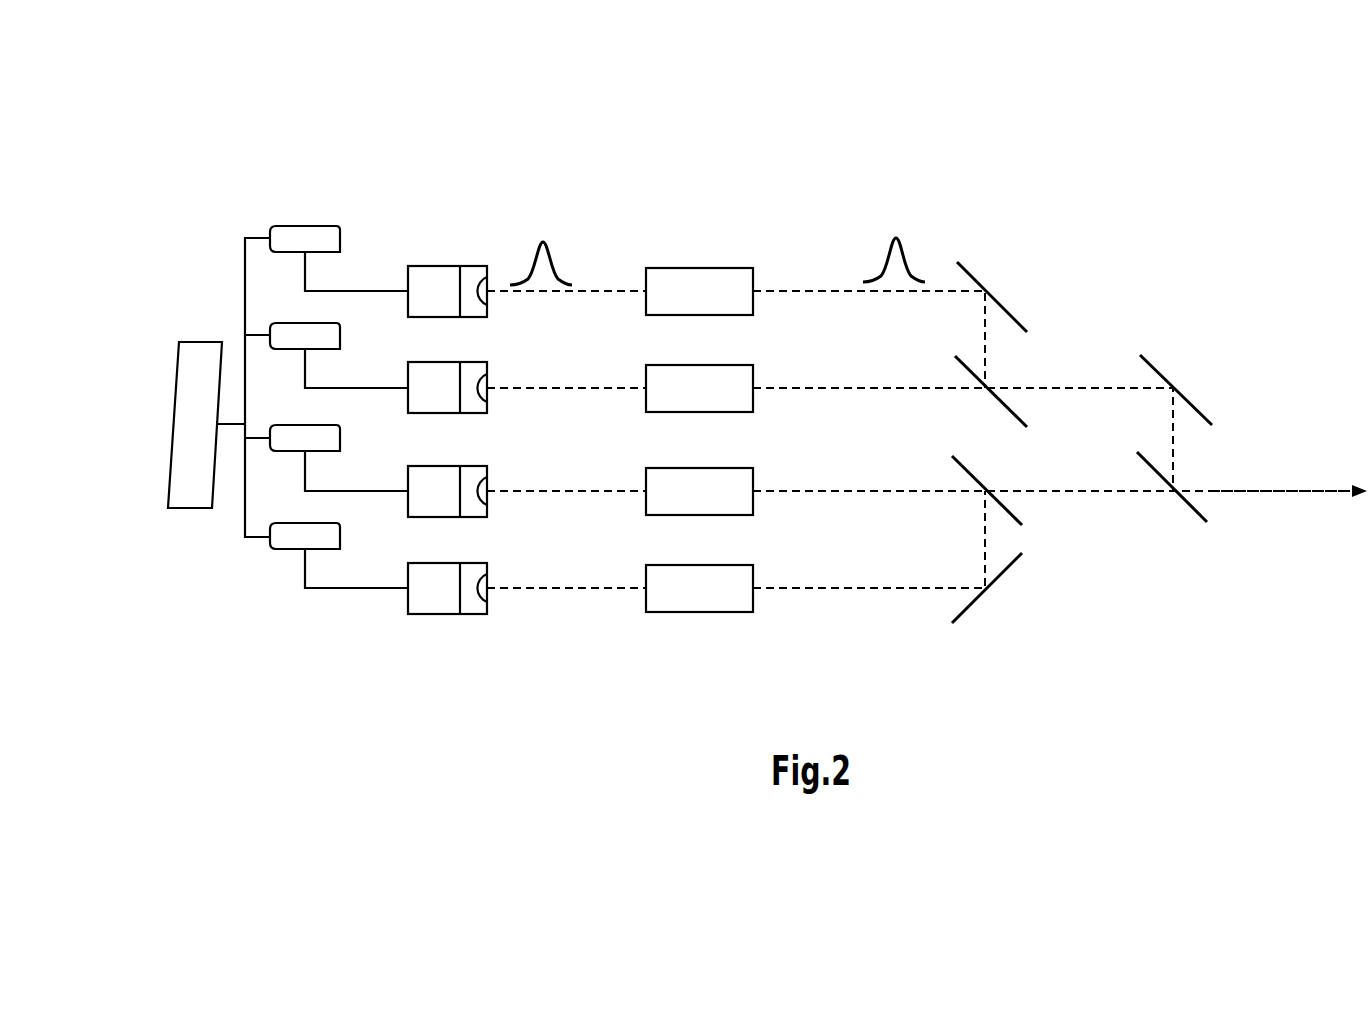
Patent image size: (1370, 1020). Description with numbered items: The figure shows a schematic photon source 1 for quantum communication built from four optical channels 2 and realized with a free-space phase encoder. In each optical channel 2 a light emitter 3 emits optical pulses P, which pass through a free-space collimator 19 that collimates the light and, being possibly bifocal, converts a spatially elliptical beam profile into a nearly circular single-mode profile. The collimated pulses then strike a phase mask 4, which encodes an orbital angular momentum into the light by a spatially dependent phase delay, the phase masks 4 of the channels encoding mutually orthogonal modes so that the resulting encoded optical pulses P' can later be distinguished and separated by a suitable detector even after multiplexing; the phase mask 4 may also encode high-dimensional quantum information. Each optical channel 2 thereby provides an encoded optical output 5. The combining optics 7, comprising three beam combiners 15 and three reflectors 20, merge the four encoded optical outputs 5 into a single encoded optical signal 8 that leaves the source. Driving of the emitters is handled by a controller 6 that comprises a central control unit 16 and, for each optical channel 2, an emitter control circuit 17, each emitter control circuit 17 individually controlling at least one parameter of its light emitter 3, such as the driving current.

The photon source 1 is at (1177, 213).
The optical channel 2 is at (785, 268).
The light emitter 3 is at (423, 267).
The phase mask 4 is at (715, 268).
The encoded optical output 5 is at (927, 295).
The controller 6 is at (230, 212).
The combining optics 7 is at (998, 228).
The encoded optical signal 8 is at (1277, 488).
The beam combiner 15 is at (1013, 413).
The central control unit 16 is at (180, 508).
The emitter control circuit 17 is at (298, 227).
The free-space collimator 19 is at (490, 282).
The reflector 20 is at (1007, 305).
The optical pulse P is at (556, 223).
The encoded optical pulse P' is at (915, 215).